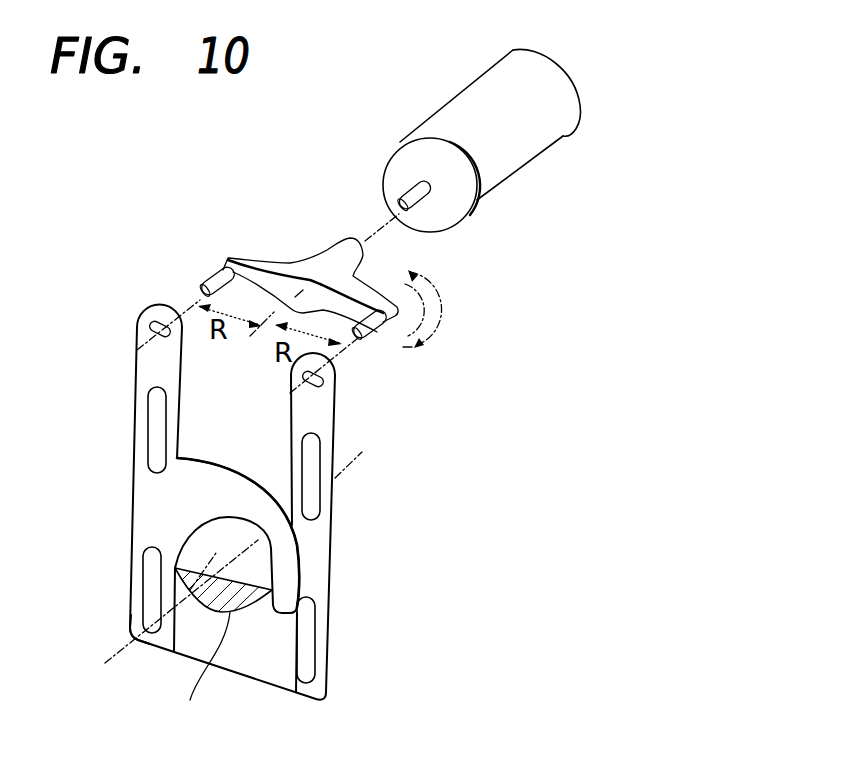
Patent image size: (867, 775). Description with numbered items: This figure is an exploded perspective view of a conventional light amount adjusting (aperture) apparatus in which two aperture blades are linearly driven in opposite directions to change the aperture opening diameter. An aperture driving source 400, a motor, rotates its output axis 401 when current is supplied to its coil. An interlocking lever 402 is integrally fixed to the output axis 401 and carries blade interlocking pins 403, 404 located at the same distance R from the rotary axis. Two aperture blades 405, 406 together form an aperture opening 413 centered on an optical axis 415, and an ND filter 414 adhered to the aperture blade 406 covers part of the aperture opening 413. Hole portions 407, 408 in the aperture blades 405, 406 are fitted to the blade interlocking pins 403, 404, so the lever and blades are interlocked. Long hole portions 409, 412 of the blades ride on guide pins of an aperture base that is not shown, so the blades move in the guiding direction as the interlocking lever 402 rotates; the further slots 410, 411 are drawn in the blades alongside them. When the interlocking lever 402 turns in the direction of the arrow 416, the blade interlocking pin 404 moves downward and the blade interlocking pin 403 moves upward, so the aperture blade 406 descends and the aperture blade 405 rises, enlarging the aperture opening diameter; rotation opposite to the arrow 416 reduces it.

The aperture driving source 400 is at (462, 93).
The output axis 401 is at (407, 188).
The interlocking lever 402 is at (340, 250).
The blade interlocking pin 403 is at (212, 281).
The blade interlocking pin 404 is at (378, 330).
The aperture blade 405 is at (134, 511).
The aperture blade 406 is at (243, 668).
The hole portion 407 is at (137, 303).
The hole portion 408 is at (316, 386).
The long hole portion 409 is at (145, 420).
The left lower slot 410 is at (140, 572).
The right upper slot 411 is at (318, 500).
The long hole portion 412 is at (326, 647).
The aperture opening 413 is at (193, 578).
The ND filter 414 is at (199, 673).
The optical axis 415 is at (128, 638).
The arrow 416 is at (440, 313).